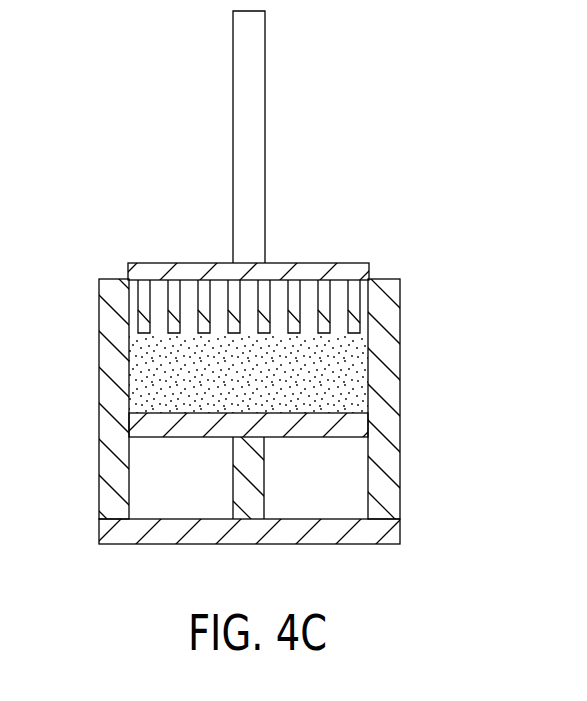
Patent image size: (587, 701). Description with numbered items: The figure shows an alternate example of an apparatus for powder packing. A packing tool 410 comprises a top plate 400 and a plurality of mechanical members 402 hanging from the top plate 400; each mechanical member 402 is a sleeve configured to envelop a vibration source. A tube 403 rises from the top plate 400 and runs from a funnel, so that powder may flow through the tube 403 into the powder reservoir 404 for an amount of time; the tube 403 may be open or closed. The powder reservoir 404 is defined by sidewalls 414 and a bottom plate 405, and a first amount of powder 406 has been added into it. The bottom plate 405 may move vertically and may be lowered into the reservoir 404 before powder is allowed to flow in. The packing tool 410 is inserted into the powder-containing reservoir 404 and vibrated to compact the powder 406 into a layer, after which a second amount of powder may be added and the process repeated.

The top plate 400 is at (337, 263).
The mechanical member 402 is at (298, 287).
The tube 403 is at (276, 89).
The powder reservoir 404 is at (505, 302).
The bottom plate 405 is at (143, 440).
The powder 406 is at (162, 392).
The packing tool 410 is at (167, 146).
The sidewall 414 is at (400, 387).